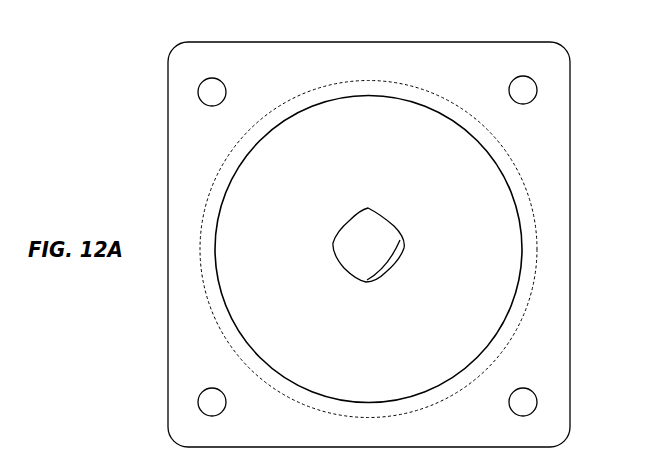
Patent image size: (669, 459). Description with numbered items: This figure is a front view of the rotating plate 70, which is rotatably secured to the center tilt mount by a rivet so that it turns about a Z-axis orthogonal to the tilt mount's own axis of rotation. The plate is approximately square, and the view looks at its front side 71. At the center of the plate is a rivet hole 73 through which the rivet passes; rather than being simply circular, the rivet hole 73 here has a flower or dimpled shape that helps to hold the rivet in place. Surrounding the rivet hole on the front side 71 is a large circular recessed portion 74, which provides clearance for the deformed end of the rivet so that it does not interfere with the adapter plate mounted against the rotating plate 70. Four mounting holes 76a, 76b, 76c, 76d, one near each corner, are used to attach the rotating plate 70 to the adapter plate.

The rotating plate 70 is at (402, 58).
The front side 71 is at (537, 223).
The rivet hole 73 is at (400, 240).
The recessed portion 74 is at (503, 295).
The mounting hole 76a is at (210, 103).
The mounting hole 76b is at (523, 101).
The mounting hole 76c is at (522, 413).
The mounting hole 76d is at (212, 413).